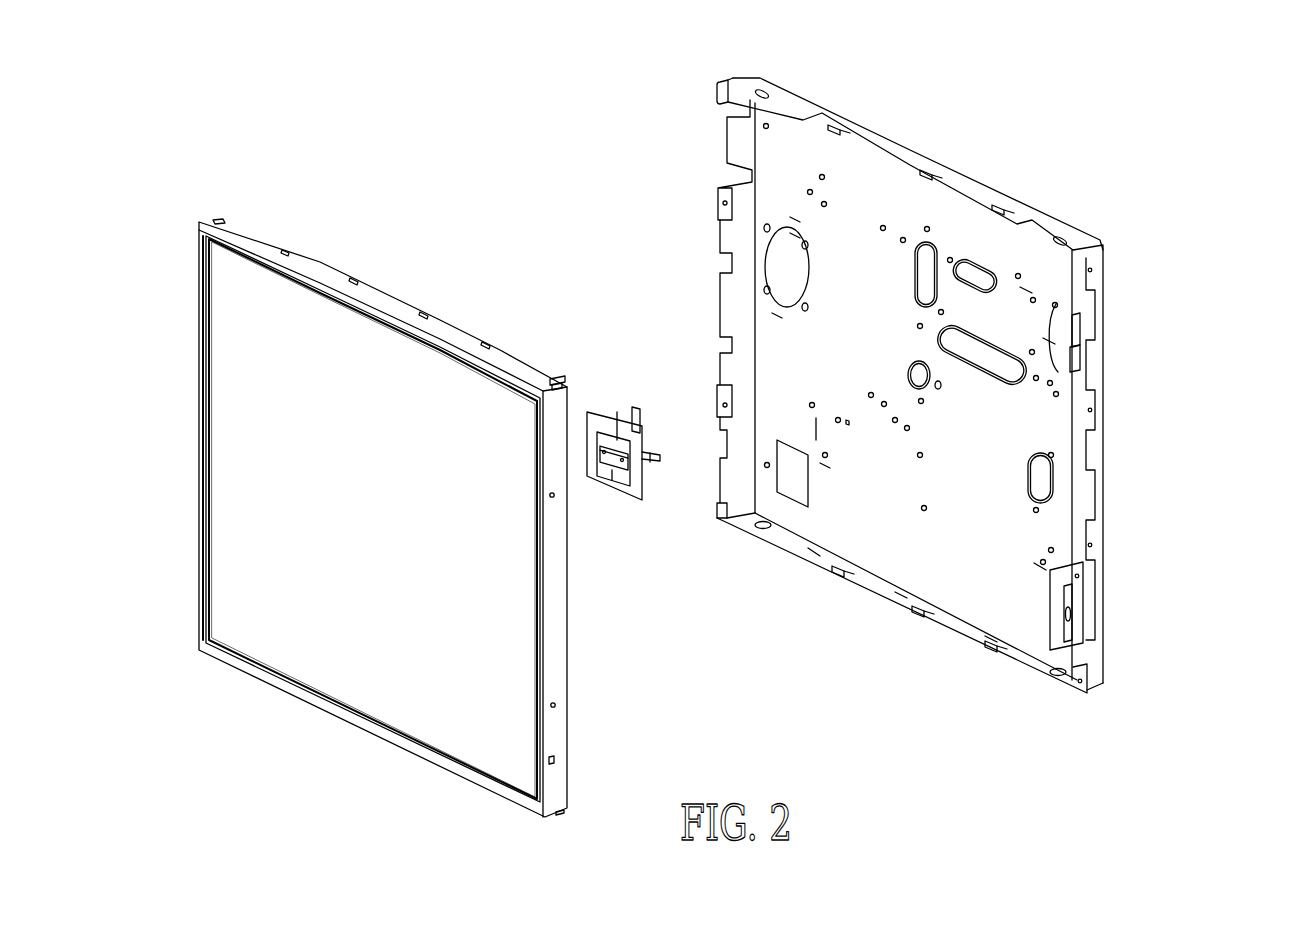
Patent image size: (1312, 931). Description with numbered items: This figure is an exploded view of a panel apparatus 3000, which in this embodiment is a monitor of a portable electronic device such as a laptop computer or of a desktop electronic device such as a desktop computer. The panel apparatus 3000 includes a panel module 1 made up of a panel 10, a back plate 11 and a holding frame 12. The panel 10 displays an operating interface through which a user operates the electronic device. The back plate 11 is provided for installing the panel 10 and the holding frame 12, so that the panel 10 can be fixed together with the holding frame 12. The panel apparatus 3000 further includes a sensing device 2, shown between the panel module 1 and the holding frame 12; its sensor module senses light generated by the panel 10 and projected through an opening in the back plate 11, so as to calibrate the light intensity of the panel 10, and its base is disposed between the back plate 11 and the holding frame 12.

The panel module 1 is at (383, 434).
The panel 10 is at (264, 286).
The back plate 11 is at (327, 277).
The sensing device 2 is at (610, 396).
The panel apparatus 3000 is at (1009, 374).
The holding frame 12 is at (973, 195).